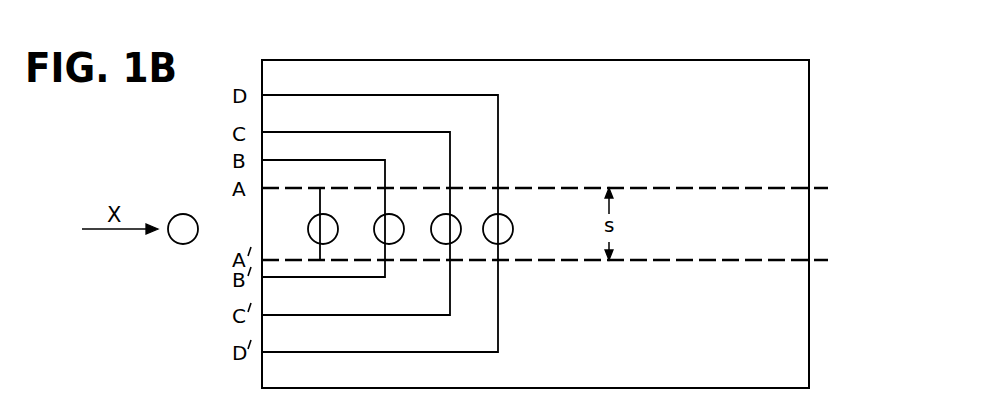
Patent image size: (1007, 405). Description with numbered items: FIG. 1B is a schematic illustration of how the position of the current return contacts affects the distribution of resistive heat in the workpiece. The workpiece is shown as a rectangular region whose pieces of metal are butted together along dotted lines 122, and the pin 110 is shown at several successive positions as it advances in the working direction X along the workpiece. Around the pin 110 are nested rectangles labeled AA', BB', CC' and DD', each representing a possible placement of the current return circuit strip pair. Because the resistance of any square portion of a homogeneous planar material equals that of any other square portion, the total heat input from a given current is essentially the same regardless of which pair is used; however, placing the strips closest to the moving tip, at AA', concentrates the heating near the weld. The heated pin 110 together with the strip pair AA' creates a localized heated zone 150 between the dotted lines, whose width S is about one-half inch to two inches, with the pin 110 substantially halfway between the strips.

The pin 110 is at (356, 218).
The dotted lines 122 is at (632, 68).
The localized heated zone 150 is at (826, 188).